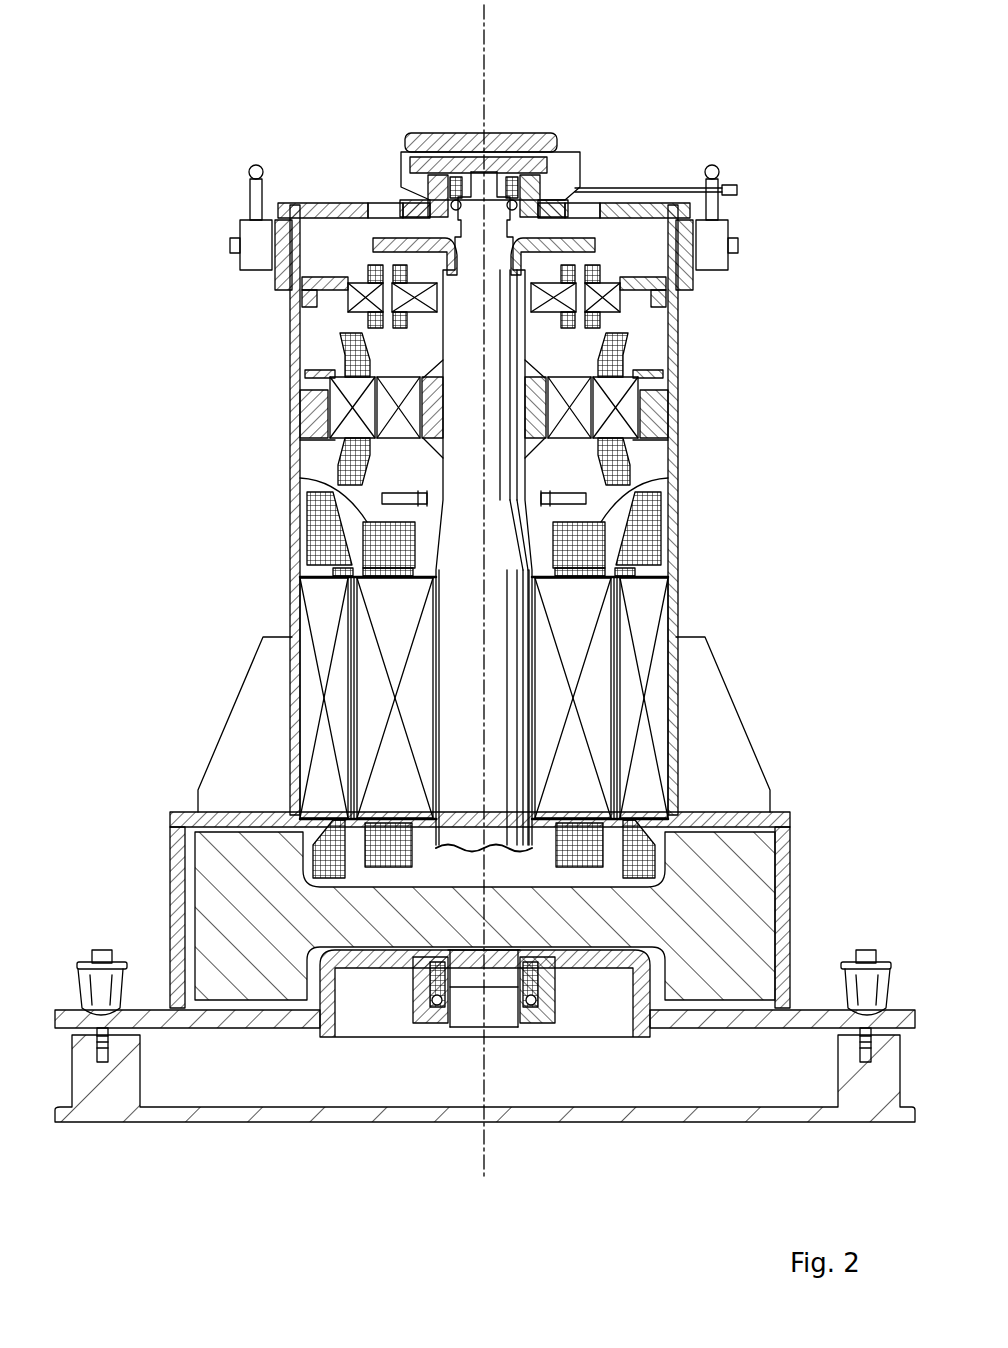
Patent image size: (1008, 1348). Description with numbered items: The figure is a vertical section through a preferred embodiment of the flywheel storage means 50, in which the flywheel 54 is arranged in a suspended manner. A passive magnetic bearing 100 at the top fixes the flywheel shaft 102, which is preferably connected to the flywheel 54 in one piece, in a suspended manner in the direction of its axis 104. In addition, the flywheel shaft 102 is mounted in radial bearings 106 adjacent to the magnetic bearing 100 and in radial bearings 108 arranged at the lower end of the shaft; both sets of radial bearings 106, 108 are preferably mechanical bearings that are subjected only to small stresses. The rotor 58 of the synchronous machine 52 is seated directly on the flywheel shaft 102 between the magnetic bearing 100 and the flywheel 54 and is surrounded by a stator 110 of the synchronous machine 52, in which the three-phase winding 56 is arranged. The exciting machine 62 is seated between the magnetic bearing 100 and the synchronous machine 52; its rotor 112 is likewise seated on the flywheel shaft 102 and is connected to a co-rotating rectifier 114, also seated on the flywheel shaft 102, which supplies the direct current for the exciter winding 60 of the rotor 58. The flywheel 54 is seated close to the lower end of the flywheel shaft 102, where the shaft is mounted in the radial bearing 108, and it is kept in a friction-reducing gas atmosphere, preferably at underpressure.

The flywheel storage means 50 is at (185, 770).
The synchronous machine 52 is at (298, 603).
The flywheel 54 is at (735, 895).
The three-phase winding 56 is at (648, 521).
The rotor 58 is at (372, 722).
The exciter winding 60 is at (385, 522).
The exciting machine 62 is at (337, 306).
The passive magnetic bearing 100 is at (437, 134).
The flywheel shaft 102 is at (500, 625).
The axis 104 is at (484, 20).
The radial bearings 106 is at (545, 130).
The radial bearings 108 is at (553, 1010).
The stator 110 is at (650, 693).
The rotor 112 is at (620, 323).
The co-rotating rectifier 114 is at (395, 240).